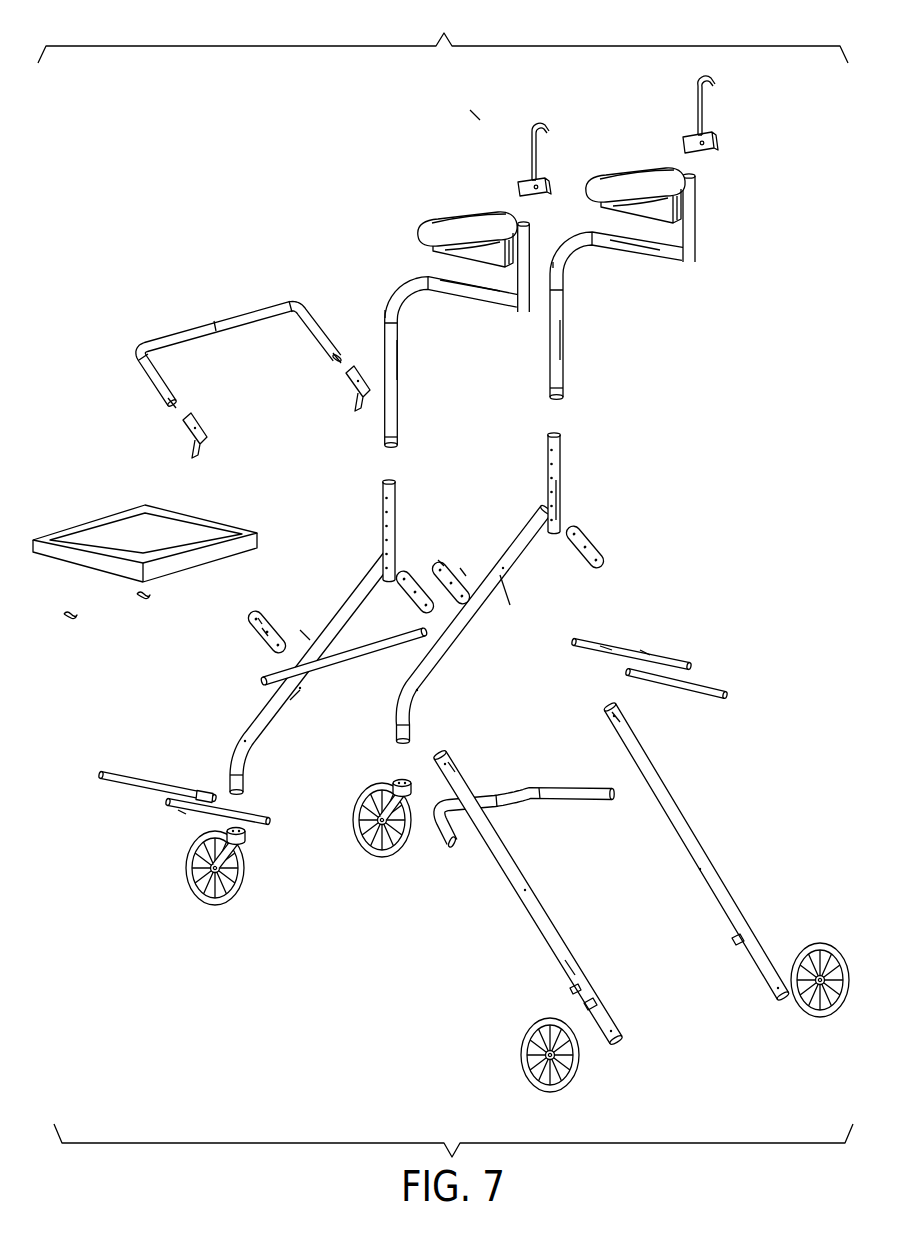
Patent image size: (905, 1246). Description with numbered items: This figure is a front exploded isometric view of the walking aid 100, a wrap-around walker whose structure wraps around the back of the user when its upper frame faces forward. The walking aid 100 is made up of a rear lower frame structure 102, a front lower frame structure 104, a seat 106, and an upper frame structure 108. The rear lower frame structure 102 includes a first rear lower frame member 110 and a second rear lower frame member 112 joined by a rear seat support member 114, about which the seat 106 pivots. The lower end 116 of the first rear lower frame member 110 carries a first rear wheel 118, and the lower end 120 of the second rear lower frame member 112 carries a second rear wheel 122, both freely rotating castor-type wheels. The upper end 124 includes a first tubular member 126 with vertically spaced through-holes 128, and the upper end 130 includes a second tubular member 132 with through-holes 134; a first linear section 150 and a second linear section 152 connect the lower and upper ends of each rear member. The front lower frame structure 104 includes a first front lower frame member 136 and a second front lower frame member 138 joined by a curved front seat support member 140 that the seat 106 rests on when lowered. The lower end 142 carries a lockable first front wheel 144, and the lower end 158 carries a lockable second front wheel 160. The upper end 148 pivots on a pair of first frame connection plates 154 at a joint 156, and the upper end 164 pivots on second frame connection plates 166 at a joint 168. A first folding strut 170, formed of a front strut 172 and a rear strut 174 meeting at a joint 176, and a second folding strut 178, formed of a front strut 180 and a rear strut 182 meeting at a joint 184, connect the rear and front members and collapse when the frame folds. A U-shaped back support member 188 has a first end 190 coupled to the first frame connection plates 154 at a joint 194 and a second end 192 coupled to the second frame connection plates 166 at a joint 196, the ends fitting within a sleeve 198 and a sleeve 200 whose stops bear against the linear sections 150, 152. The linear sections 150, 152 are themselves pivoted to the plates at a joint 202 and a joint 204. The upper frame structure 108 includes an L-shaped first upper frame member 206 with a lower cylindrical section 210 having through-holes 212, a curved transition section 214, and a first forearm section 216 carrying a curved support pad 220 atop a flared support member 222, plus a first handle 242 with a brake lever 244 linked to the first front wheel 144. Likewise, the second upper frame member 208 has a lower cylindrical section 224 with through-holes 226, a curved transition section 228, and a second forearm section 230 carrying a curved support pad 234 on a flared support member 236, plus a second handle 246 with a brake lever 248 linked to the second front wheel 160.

The walking aid 100 is at (445, 580).
The rear lower frame structure 102 is at (306, 628).
The front lower frame structure 104 is at (560, 958).
The seat 106 is at (130, 525).
The upper frame structure 108 is at (448, 100).
The first rear lower frame member 110 is at (335, 612).
The second rear lower frame member 112 is at (455, 655).
The rear seat support member 114 is at (343, 660).
The lower end 116 is at (247, 788).
The first rear wheel 118 is at (222, 900).
The lower end 120 is at (396, 752).
The second rear wheel 122 is at (380, 855).
The upper end 124 is at (402, 523).
The first tubular member 126 is at (383, 560).
The through-holes 128 is at (383, 516).
The upper end 130 is at (567, 500).
The second tubular member 132 is at (560, 462).
The through-holes 134 is at (548, 466).
The first front lower frame member 136 is at (537, 895).
The second front lower frame member 138 is at (700, 880).
The front seat support member 140 is at (505, 806).
The lower end 142 is at (620, 1050).
The first front wheel 144 is at (560, 1088).
The upper end 148 is at (444, 744).
The first linear section 150 is at (300, 688).
The second linear section 152 is at (501, 577).
The first frame connection plates 154 is at (402, 600).
The joint 156 is at (263, 648).
The lower end 158 is at (783, 1010).
The second front wheel 160 is at (830, 1015).
The upper end 164 is at (601, 703).
The second frame connection plates 166 is at (575, 560).
The joint 168 is at (455, 592).
The first folding strut 170 is at (176, 819).
The front strut 172 is at (258, 825).
The rear strut 174 is at (190, 796).
The joint 176 is at (207, 795).
The second folding strut 178 is at (637, 642).
The front strut 180 is at (705, 692).
The rear strut 182 is at (607, 652).
The joint 184 is at (695, 660).
The back support member 188 is at (200, 312).
The first end 190 is at (186, 407).
The second end 192 is at (347, 362).
The joint 194 is at (255, 621).
The joint 196 is at (442, 560).
The sleeve 198 is at (183, 436).
The sleeve 200 is at (353, 390).
The joint 202 is at (265, 630).
The joint 204 is at (462, 570).
The first upper frame member 206 is at (402, 356).
The second upper frame member 208 is at (568, 308).
The lower cylindrical section 210 is at (391, 403).
The through-holes 212 is at (396, 438).
The curved transition section 214 is at (397, 300).
The first forearm section 216 is at (472, 295).
The curved support pad 220 is at (465, 223).
The flared support member 222 is at (470, 245).
The lower cylindrical section 224 is at (562, 370).
The through-holes 226 is at (551, 384).
The curved transition section 228 is at (583, 236).
The second forearm section 230 is at (657, 245).
The curved support pad 234 is at (672, 178).
The flared support member 236 is at (640, 200).
The first handle 242 is at (527, 222).
The brake lever 244 is at (532, 160).
The second handle 246 is at (690, 178).
The brake lever 248 is at (705, 110).